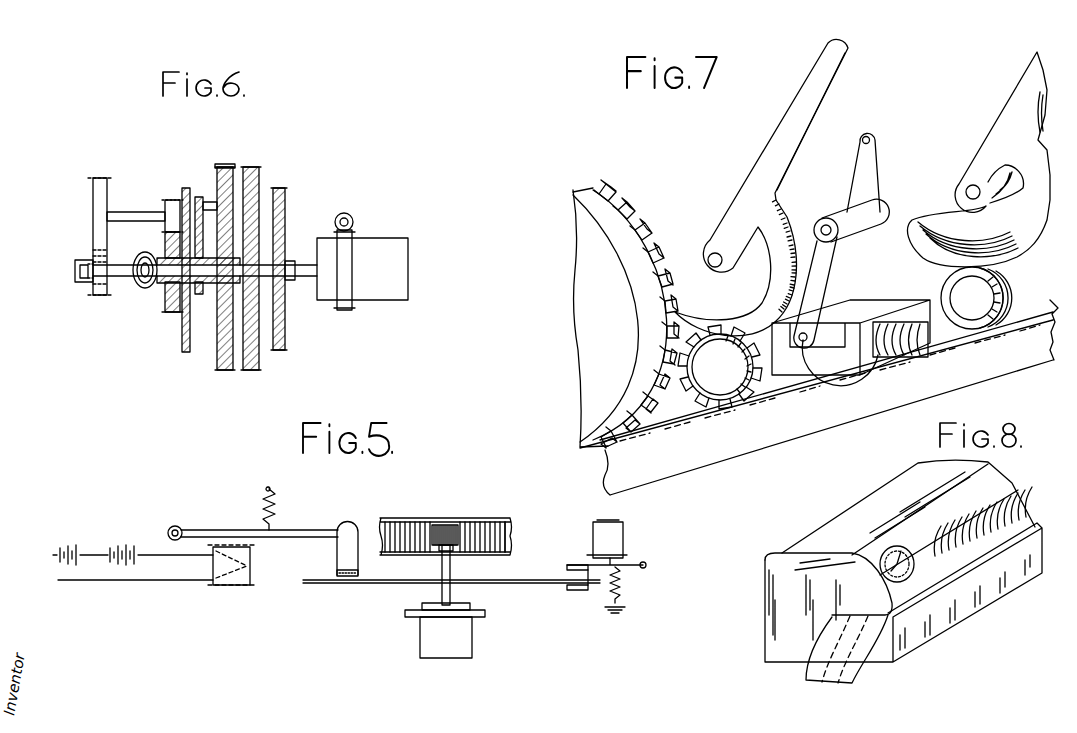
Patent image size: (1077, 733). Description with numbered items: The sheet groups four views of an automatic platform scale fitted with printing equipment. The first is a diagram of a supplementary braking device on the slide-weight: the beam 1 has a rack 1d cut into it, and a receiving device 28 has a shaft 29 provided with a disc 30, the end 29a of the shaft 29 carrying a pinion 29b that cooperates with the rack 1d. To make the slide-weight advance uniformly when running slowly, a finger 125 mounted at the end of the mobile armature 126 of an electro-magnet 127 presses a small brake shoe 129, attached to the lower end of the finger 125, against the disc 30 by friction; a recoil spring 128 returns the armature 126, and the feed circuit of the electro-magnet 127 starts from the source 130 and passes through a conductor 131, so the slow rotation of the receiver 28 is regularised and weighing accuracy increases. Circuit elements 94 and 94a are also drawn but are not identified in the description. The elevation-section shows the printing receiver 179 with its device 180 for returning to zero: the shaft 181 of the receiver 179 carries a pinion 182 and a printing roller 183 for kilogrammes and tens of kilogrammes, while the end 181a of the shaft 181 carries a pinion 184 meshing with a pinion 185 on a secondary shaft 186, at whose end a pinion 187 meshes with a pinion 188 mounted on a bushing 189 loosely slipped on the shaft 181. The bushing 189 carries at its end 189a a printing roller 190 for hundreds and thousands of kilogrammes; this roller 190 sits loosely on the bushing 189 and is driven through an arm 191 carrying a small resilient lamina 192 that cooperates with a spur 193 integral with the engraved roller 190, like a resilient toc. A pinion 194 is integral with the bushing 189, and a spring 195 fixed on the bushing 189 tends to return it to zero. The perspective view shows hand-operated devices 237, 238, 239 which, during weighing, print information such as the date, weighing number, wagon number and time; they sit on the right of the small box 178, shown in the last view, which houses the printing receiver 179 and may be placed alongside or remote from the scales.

In FIG. 5, the beam 1 is at (400, 520).
In FIG. 5, the rack 1d is at (500, 520).
In FIG. 5, the receiving device 28 is at (421, 632).
In FIG. 5, the shaft 29 is at (451, 570).
In FIG. 5, the end of the shaft 29a is at (439, 558).
In FIG. 5, the pinion 29b is at (445, 525).
In FIG. 5, the disc 30 is at (505, 584).
In FIG. 5, the contact switch 94 is at (564, 600).
In FIG. 5, the relay coil 94a is at (620, 528).
In FIG. 5, the finger 125 is at (343, 525).
In FIG. 5, the mobile armature 126 is at (208, 530).
In FIG. 5, the electro-magnet 127 is at (237, 586).
In FIG. 5, the recoil spring 128 is at (268, 489).
In FIG. 5, the small brake shoe 129 is at (337, 572).
In FIG. 5, the source 130 is at (112, 543).
In FIG. 5, the conductor 131 is at (95, 583).
In FIG. 8, the small box 178 is at (883, 492).
In FIG. 6, the printing receiver 179 is at (395, 240).
In FIG. 6, the device for returning to zero 180 is at (352, 218).
In FIG. 6, the shaft 181 is at (310, 278).
In FIG. 6, the end of the shaft 181a is at (122, 277).
In FIG. 6, the pinion 182 is at (286, 216).
In FIG. 6, the printing roller 183 is at (260, 177).
In FIG. 7, the printing roller 183 is at (593, 248).
In FIG. 6, the pinion 184 is at (86, 284).
In FIG. 6, the pinion 185 is at (93, 205).
In FIG. 6, the secondary shaft 186 is at (128, 212).
In FIG. 6, the pinion 187 is at (165, 205).
In FIG. 6, the pinion 188 is at (175, 313).
In FIG. 6, the bushing 189 is at (157, 283).
In FIG. 6, the end of the bushing 189a is at (275, 326).
In FIG. 6, the printing roller 190 is at (225, 371).
In FIG. 6, the arm 191 is at (200, 197).
In FIG. 6, the small resilient lamina 192 is at (209, 202).
In FIG. 6, the spur 193 is at (228, 174).
In FIG. 6, the pinion 194 is at (186, 352).
In FIG. 6, the spring 195 is at (141, 255).
In FIG. 7, the device 237 is at (763, 158).
In FIG. 7, the device 238 is at (868, 157).
In FIG. 7, the device 239 is at (998, 125).